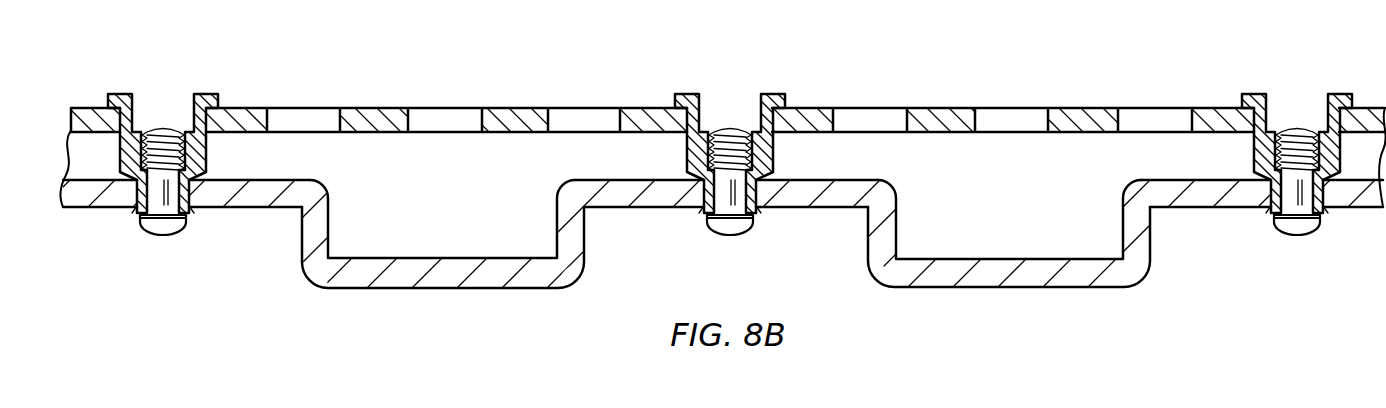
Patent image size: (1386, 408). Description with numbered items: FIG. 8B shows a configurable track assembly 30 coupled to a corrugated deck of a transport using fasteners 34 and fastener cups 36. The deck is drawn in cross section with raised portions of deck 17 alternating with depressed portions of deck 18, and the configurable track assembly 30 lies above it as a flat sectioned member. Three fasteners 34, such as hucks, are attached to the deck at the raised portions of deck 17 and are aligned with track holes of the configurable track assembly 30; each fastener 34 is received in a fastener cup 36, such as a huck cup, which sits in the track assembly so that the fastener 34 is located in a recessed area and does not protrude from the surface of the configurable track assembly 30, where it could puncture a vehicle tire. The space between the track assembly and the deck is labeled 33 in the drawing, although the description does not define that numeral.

The raised portions of deck 17 is at (103, 208).
The depressed portions of deck 18 is at (432, 289).
The configurable track assembly 30 is at (500, 107).
The cavity between plates 33 is at (1007, 169).
The fasteners 34 is at (162, 236).
The fastener cups 36 is at (122, 93).